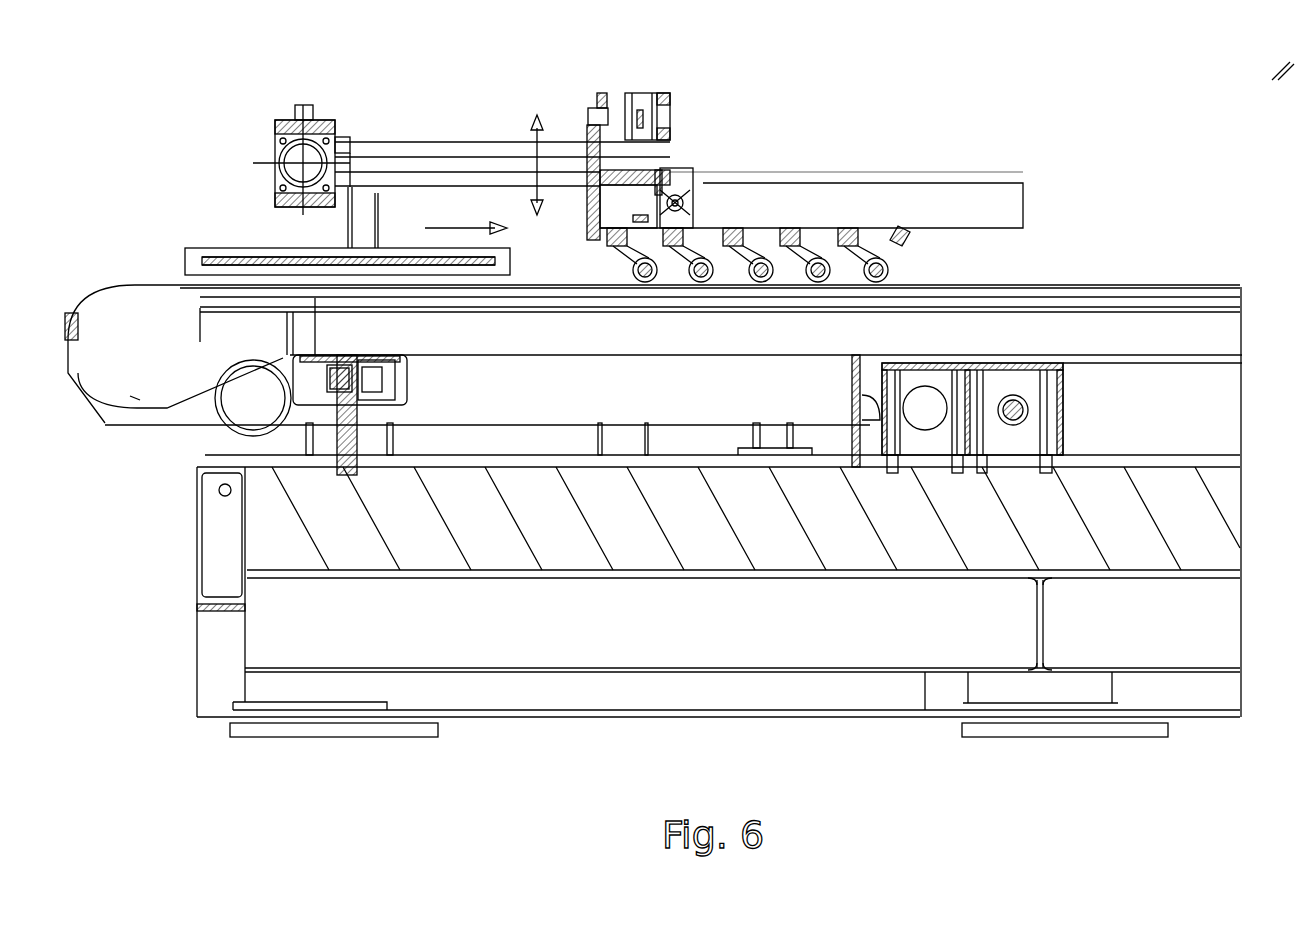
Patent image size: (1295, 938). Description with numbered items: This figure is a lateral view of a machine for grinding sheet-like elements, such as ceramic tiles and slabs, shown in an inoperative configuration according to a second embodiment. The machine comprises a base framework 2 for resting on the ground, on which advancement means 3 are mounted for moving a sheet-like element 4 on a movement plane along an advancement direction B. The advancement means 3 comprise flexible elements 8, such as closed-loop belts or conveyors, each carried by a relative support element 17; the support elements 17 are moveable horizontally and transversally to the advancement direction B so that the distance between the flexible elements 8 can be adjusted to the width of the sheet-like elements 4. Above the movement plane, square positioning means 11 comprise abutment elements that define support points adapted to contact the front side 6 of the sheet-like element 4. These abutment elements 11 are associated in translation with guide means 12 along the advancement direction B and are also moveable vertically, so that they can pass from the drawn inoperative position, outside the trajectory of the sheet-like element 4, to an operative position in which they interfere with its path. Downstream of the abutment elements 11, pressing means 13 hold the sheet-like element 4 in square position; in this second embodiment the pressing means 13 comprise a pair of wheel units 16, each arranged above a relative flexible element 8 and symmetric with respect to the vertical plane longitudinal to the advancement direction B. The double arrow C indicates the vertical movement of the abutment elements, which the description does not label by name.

The base framework 2 is at (217, 650).
The advancement means 3 is at (757, 223).
The sheet-like element 4 is at (297, 280).
The front side 6 is at (648, 281).
The flexible elements 8 is at (95, 305).
The square positioning means 11 is at (670, 207).
The guide means 12 is at (373, 147).
The pressing means 13 is at (843, 185).
The wheel units 16 is at (908, 227).
The support element 17 is at (993, 338).
The advancement direction B is at (463, 227).
The direction C is at (547, 138).